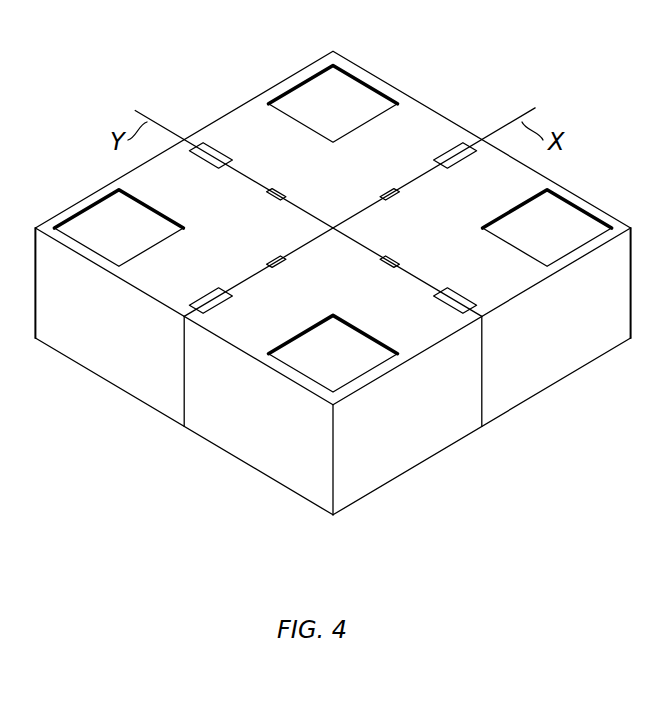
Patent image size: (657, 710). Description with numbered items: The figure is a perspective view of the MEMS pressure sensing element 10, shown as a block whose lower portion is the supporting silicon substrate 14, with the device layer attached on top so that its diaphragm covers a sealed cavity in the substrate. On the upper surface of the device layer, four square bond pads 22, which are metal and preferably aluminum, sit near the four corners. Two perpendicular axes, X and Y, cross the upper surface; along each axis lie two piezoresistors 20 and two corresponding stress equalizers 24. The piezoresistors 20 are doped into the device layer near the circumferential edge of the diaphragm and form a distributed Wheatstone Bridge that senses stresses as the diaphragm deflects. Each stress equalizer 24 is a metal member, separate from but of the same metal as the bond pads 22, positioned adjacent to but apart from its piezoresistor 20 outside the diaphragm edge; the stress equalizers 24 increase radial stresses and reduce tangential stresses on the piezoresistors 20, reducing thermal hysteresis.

The MEMS pressure sensing element 10 is at (70, 44).
The supporting silicon substrate 14 is at (253, 469).
The piezoresistors 20 is at (267, 200).
The bond pads 22 is at (307, 117).
The stress equalizers 24 is at (200, 162).